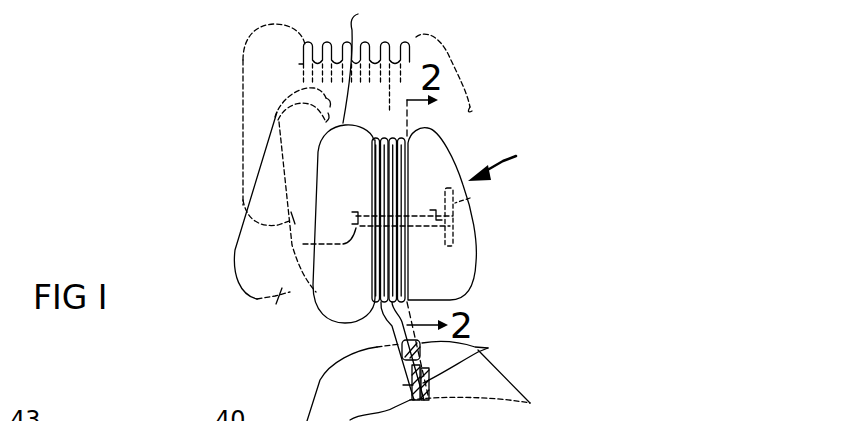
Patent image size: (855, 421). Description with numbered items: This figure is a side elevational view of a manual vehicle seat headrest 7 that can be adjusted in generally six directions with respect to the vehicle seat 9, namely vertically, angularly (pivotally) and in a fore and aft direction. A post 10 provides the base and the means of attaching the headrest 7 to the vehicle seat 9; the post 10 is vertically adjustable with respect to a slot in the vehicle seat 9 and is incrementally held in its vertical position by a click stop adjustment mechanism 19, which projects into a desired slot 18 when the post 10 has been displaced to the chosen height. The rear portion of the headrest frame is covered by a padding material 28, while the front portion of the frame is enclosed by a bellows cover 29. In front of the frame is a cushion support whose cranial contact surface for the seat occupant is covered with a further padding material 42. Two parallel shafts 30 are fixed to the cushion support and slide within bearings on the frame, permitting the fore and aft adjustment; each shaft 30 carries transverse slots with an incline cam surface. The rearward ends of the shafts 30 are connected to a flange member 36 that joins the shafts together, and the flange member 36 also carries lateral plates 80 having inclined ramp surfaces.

The vehicle seat headrest 7 is at (500, 161).
The vehicle seat 9 is at (320, 380).
The post 10 is at (390, 320).
The slot 18 is at (466, 367).
The click stop adjustment mechanism 19 is at (403, 362).
The padding material 28 is at (438, 44).
The bellows cover 29 is at (365, 63).
The shafts 30 is at (303, 244).
The flange member 36 is at (495, 188).
The padding material 42 is at (248, 48).
The lateral plates 80 is at (437, 213).